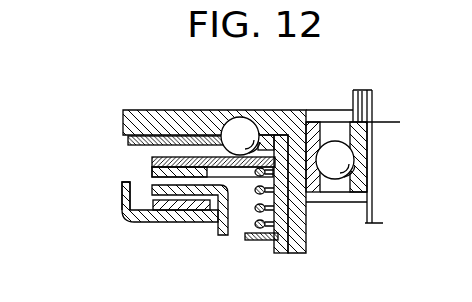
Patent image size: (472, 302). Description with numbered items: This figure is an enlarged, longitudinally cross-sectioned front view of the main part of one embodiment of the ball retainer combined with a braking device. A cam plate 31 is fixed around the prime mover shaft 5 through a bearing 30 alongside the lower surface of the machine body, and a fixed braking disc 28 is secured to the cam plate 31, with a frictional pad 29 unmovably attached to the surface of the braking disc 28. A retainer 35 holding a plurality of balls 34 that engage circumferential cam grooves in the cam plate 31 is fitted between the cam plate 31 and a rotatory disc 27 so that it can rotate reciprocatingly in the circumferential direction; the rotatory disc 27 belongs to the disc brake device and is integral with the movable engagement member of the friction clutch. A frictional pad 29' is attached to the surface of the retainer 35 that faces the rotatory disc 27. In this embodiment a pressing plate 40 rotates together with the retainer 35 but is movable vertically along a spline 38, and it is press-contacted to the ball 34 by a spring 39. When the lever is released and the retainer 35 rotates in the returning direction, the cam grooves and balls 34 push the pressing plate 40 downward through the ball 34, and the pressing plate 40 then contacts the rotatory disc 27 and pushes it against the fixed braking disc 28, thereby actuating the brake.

The cam plate 31 is at (180, 114).
The retainer 35 is at (205, 136).
The ball 34 is at (242, 123).
The prime mover shaft 5 is at (366, 103).
The pressing plate 40 is at (150, 157).
The frictional pad 29' is at (176, 161).
The rotatory disc 27 is at (123, 200).
The fixed braking disc 28 is at (143, 226).
The frictional pad 29 is at (190, 222).
The spring 39 is at (254, 212).
The spline 38 is at (266, 243).
The bearing 30 is at (323, 194).